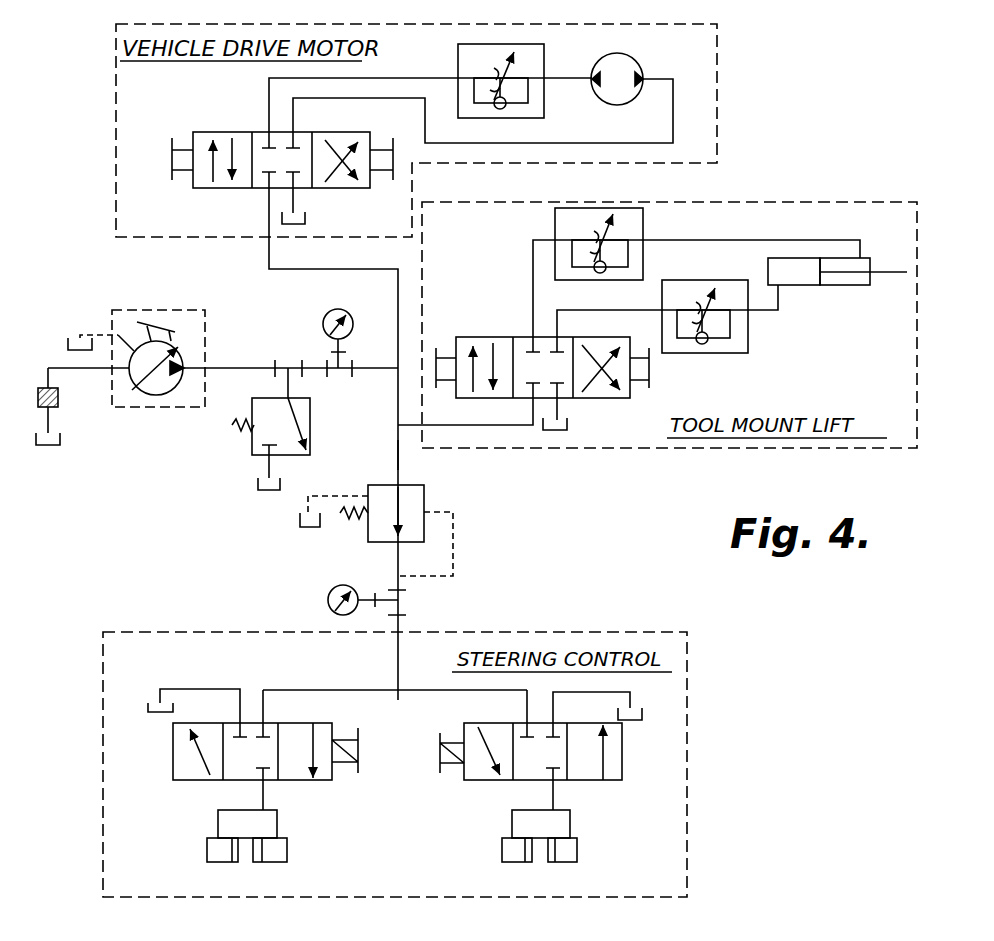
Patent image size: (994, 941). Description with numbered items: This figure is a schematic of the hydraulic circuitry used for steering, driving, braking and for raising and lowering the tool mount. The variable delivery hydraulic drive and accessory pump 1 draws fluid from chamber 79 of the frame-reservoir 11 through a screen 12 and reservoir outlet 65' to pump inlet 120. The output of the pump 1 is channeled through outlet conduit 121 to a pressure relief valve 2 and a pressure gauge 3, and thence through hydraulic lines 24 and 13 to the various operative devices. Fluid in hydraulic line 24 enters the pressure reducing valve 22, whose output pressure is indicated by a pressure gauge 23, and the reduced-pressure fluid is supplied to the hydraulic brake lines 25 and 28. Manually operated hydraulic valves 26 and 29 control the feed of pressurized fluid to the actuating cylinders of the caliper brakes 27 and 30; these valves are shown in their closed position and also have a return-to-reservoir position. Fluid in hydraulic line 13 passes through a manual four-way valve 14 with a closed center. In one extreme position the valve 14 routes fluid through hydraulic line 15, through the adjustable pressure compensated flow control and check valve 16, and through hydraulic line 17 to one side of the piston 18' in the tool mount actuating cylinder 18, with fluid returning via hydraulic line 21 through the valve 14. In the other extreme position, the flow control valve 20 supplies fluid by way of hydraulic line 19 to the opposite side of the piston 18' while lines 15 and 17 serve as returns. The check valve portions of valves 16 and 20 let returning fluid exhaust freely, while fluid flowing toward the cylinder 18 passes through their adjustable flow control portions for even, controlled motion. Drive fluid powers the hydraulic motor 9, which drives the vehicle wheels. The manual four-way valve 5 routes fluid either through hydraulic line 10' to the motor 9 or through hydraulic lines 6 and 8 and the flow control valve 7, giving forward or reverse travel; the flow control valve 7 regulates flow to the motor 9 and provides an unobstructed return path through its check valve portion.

The variable delivery hydraulic drive and accessory pump 1 is at (166, 395).
The pressure relief valve 2 is at (310, 418).
The pressure gauge 3 is at (350, 333).
The manual four-way valve 5 is at (360, 142).
The hydraulic line 6 is at (405, 78).
The flow control valve 7 is at (517, 76).
The hydraulic line 8 is at (556, 80).
The hydraulic motor 9 is at (638, 60).
The hydraulic line 10' is at (483, 112).
The frame-reservoir 11 is at (307, 218).
The screen 12 is at (58, 400).
The hydraulic line 13 is at (480, 425).
The manual four-way valve 14 is at (490, 337).
The hydraulic line 15 is at (533, 260).
The adjustable pressure compensated flow control and check valve 16 is at (643, 232).
The hydraulic line 17 is at (760, 240).
The tool mount actuating cylinder 18 is at (837, 269).
The piston 18' is at (855, 289).
The line to cylinder rod end 19 is at (778, 312).
The flow control valve 20 is at (730, 353).
The hydraulic line 21 is at (590, 310).
The pressure reducing valve 22 is at (426, 492).
The pressure gauge 23 is at (330, 590).
The hydraulic line 24 is at (398, 458).
The hydraulic brake line 25 is at (318, 690).
The manually operated hydraulic valve 26 is at (180, 782).
The caliper brake 27 is at (277, 832).
The hydraulic brake line 28 is at (420, 692).
The manually operated hydraulic valve 29 is at (478, 782).
The caliper brake 30 is at (577, 845).
The reservoir outlet 65' is at (82, 344).
The chamber 79 is at (60, 445).
The pump inlet 120 is at (126, 380).
The outlet conduit 121 is at (200, 368).